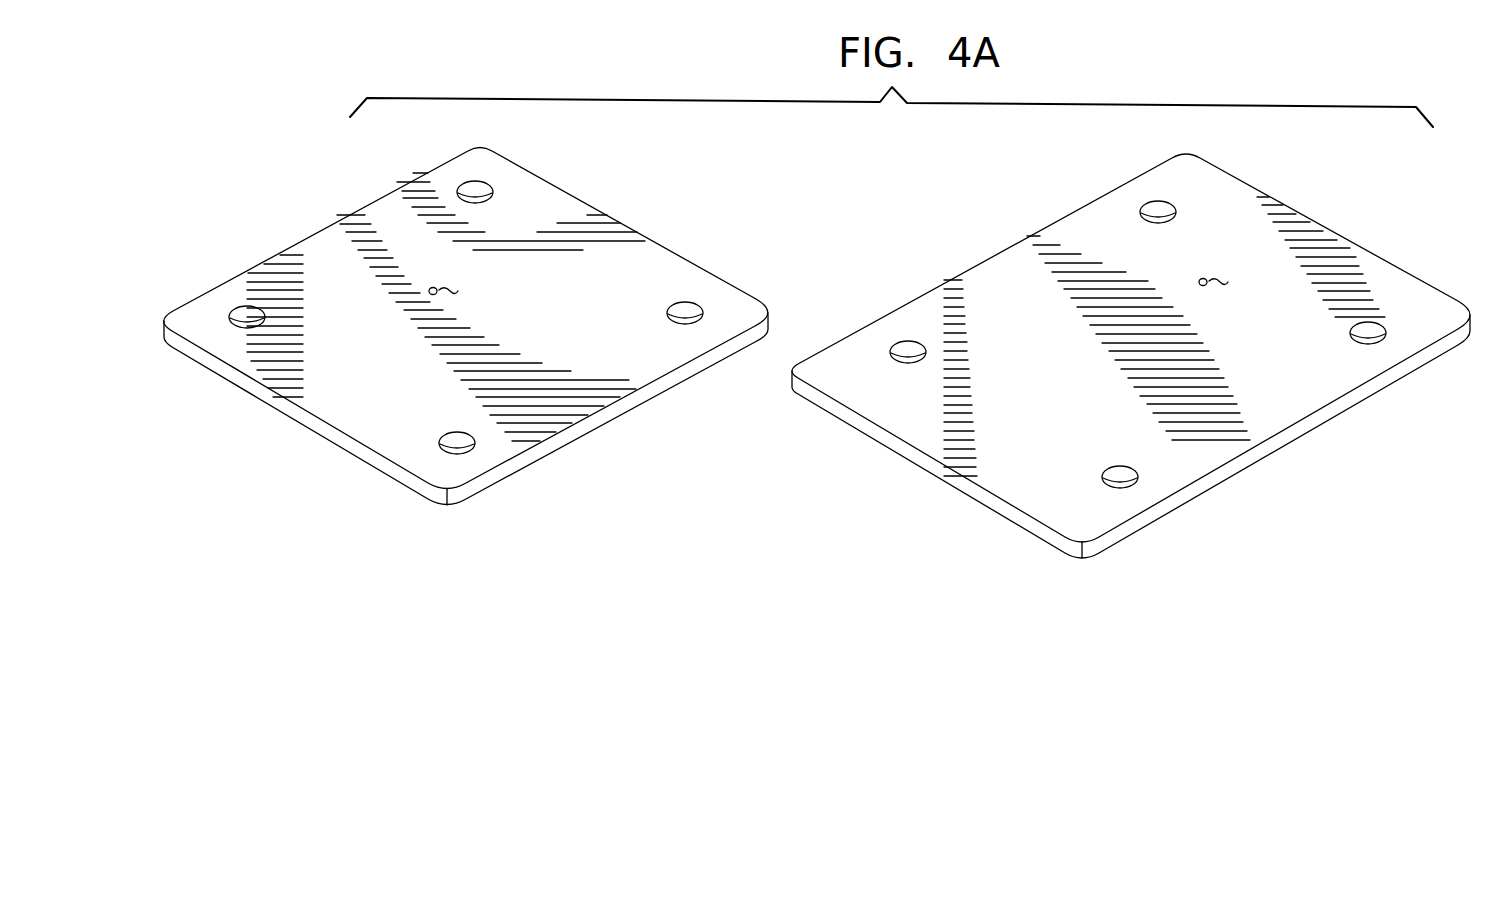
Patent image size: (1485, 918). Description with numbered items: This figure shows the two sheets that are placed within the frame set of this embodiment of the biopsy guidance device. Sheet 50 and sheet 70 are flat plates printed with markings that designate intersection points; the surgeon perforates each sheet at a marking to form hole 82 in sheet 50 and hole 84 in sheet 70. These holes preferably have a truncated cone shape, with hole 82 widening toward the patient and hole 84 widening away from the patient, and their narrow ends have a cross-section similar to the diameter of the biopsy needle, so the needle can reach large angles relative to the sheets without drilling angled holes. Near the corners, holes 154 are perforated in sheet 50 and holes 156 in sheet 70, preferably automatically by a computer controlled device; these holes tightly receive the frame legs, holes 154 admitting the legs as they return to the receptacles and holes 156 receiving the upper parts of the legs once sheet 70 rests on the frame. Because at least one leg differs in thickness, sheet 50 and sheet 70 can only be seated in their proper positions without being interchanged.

The sheet 50 is at (1265, 194).
The sheet 70 is at (548, 190).
The hole 82 is at (1231, 282).
The hole 84 is at (462, 296).
The holes 154 is at (1158, 212).
The holes 156 is at (472, 190).